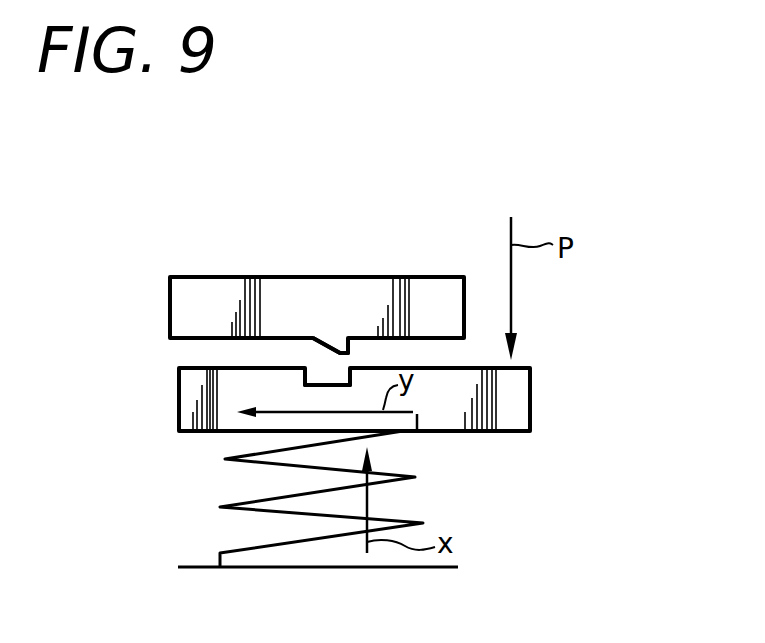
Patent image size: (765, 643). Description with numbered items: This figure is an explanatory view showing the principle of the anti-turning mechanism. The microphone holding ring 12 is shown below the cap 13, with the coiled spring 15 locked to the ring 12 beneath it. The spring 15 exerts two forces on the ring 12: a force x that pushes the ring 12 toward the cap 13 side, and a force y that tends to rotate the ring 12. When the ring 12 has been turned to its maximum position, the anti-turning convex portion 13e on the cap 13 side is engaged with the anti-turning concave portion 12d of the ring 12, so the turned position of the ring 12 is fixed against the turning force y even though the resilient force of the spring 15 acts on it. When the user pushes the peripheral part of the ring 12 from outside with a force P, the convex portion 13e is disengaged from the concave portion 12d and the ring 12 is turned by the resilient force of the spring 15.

The microphone holding ring 12 is at (533, 393).
The anti-turning concave portion 12d is at (312, 383).
The cap 13 is at (170, 305).
The anti-turning convex portion 13e is at (346, 350).
The coiled spring 15 is at (403, 477).